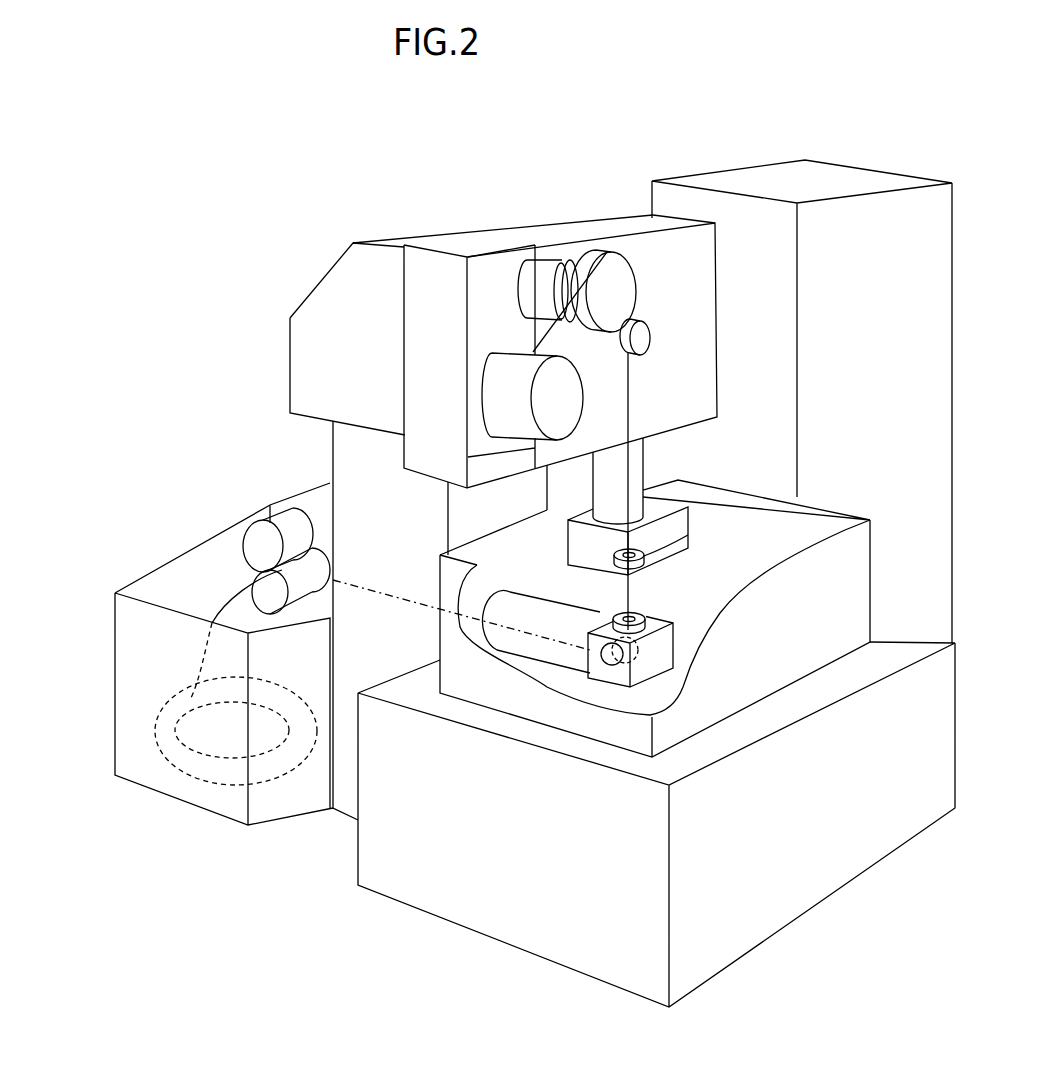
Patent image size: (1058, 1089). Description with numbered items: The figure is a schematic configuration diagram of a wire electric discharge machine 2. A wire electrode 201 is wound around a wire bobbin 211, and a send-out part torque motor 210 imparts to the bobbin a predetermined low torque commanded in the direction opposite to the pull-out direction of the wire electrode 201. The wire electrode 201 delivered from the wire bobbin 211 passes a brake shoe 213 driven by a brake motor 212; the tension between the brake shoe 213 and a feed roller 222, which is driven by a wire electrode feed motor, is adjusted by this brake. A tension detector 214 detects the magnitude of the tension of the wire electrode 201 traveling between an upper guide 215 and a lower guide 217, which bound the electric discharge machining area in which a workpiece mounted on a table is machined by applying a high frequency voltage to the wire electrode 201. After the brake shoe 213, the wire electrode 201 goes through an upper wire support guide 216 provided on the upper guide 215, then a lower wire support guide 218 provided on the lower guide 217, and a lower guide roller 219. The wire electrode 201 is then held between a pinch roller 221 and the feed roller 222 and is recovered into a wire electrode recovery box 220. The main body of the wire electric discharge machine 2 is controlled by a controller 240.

The wire electric discharge machine 2 is at (218, 190).
The wire electrode 201 is at (630, 370).
The send-out part torque motor 210 is at (473, 360).
The wire bobbin 211 is at (500, 365).
The brake motor 212 is at (550, 268).
The brake shoe 213 is at (608, 255).
The tension detector 214 is at (640, 325).
The upper guide 215 is at (687, 507).
The upper wire support guide 216 is at (680, 540).
The lower guide 217 is at (683, 688).
The lower wire support guide 218 is at (673, 625).
The lower guide roller 219 is at (590, 680).
The wire electrode recovery box 220 is at (128, 683).
The pinch roller 221 is at (260, 530).
The feed roller 222 is at (270, 592).
The controller 240 is at (812, 162).